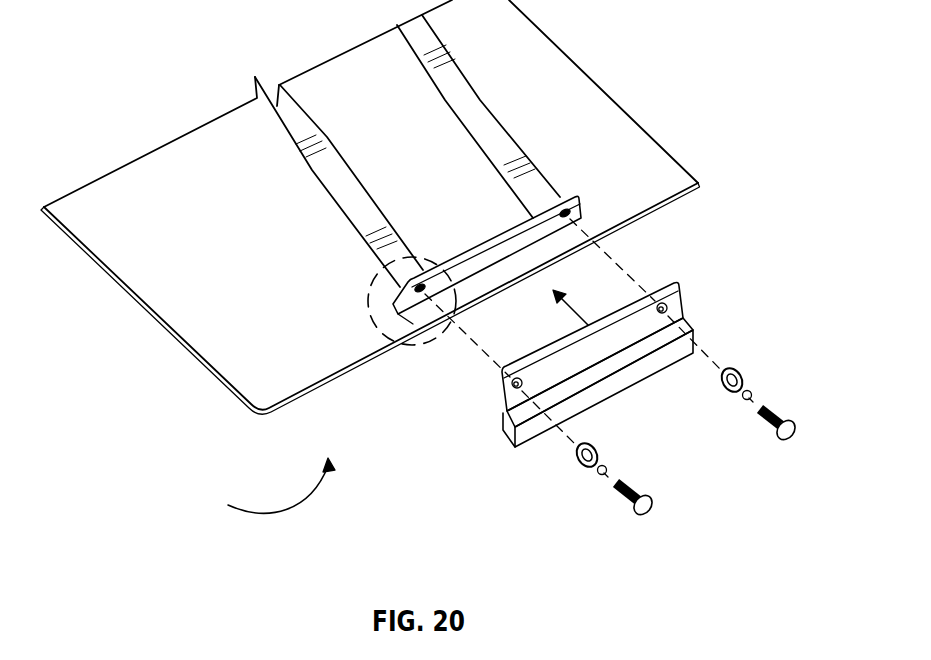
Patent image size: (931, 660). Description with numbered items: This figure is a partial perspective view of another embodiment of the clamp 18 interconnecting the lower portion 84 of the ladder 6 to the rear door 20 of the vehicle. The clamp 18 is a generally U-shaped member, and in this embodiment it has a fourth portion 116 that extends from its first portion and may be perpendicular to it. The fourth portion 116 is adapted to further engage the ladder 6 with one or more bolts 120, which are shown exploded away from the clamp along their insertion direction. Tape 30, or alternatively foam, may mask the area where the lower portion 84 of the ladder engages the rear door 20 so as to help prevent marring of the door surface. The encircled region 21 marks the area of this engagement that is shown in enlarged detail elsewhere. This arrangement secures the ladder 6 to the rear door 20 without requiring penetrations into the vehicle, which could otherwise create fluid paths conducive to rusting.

The rear door 20 is at (139, 165).
The ladder 6 is at (467, 98).
The lower portion 84 is at (518, 256).
The tape 30 is at (467, 299).
The detail region 21 is at (418, 344).
The clamp 18 is at (580, 393).
The fourth portion 116 is at (587, 347).
The bolts 120 is at (622, 508).